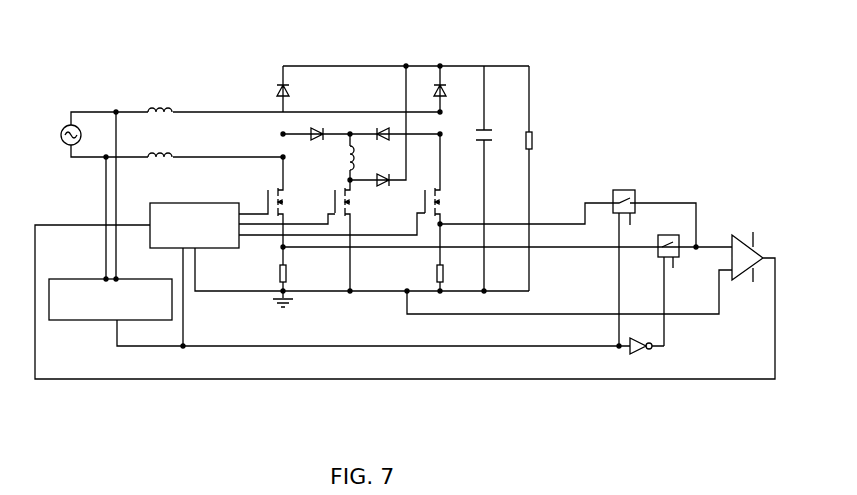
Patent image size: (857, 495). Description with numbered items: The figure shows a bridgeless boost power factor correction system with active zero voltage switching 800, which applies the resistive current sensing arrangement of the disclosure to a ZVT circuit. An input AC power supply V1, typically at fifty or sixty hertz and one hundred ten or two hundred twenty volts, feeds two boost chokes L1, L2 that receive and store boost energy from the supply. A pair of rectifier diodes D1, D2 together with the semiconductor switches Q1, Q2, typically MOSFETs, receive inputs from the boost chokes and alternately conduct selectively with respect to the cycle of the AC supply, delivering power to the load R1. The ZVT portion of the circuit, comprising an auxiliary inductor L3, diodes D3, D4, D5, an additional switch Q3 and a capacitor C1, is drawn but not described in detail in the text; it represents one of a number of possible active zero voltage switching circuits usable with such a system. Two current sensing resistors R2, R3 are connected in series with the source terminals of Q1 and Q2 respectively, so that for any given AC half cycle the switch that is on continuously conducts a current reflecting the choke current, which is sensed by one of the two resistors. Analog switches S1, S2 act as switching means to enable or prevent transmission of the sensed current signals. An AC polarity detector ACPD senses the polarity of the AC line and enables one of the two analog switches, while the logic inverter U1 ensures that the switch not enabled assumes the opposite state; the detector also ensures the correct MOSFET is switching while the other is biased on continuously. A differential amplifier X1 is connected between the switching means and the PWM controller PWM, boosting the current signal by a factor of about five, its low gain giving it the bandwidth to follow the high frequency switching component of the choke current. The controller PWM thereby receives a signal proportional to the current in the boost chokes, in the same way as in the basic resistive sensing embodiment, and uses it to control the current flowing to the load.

The bridgeless boost PFC system with active zero voltage switching 800 is at (630, 0).
The input AC power supply V1 is at (78, 136).
The boost choke L1 is at (294, 124).
The boost choke L2 is at (215, 169).
The inductor L3 is at (340, 157).
The rectifier diode D1 is at (294, 89).
The rectifier diode D2 is at (451, 89).
The diode D3 is at (361, 129).
The diode D4 is at (389, 144).
The diode D5 is at (378, 144).
The semiconductor switch Q1 is at (261, 202).
The semiconductor switch Q2 is at (339, 184).
The transistor Q3 is at (294, 235).
The load R1 is at (548, 178).
The current sensing resistor R2 is at (272, 269).
The current sensing resistor R3 is at (428, 257).
The bulk capacitor C1 is at (493, 178).
The analog switch S1 is at (652, 260).
The analog switch S2 is at (666, 282).
The differential amplifier X1 is at (405, 299).
The logic inverter U1 is at (647, 337).
The PWM controller PWM is at (194, 225).
The AC polarity detector ACPD is at (110, 299).